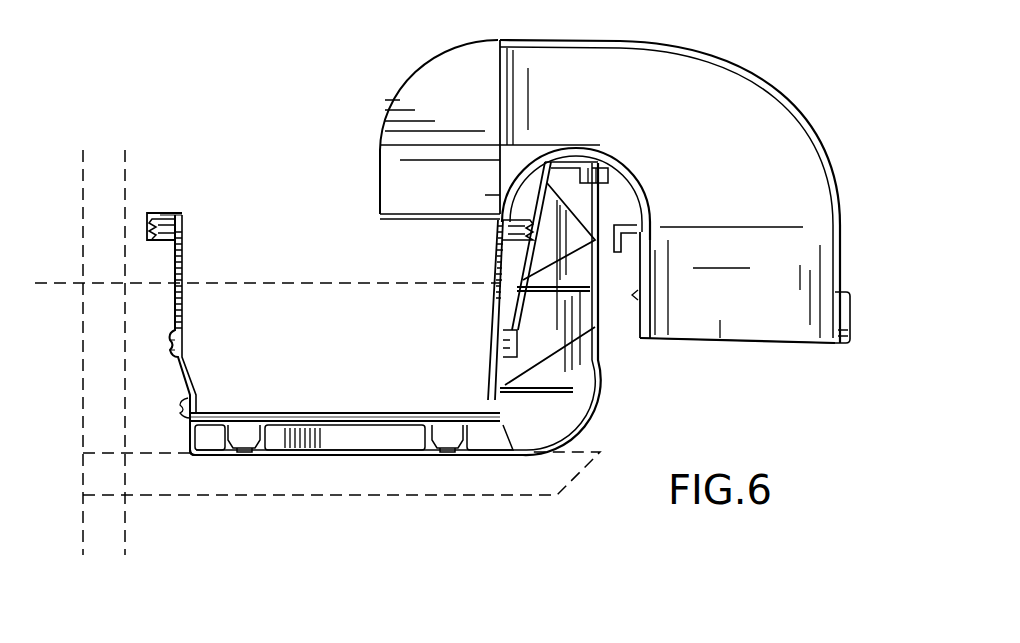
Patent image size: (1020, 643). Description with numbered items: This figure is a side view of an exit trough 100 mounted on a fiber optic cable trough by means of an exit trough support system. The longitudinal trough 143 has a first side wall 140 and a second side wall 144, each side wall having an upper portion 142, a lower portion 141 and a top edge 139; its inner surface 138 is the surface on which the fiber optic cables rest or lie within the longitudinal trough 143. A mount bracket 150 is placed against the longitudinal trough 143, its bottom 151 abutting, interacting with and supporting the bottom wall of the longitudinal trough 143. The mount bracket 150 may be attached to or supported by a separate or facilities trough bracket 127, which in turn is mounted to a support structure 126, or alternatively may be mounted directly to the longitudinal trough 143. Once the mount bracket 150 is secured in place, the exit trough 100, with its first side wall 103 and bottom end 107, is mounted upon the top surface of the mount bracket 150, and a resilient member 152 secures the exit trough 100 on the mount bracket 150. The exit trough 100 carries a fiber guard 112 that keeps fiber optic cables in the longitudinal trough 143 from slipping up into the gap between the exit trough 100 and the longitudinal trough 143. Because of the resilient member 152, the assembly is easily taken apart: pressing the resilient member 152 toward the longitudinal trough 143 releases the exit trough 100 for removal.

The exit trough 100 is at (638, 223).
The first side wall 103 is at (797, 180).
The bottom end 107 is at (772, 343).
The fiber guard 112 is at (495, 230).
The support structure 126 is at (103, 522).
The bracket 127 is at (477, 470).
The inner surface 138 is at (350, 413).
The top edge 139 is at (160, 216).
The first side wall 140 is at (146, 294).
The lower portion 141 is at (150, 378).
The upper portion 142 is at (150, 213).
The longitudinal trough 143 is at (342, 417).
The second side wall 144 is at (495, 300).
The mount bracket 150 is at (428, 308).
The bottom 151 is at (395, 440).
The resilient member 152 is at (627, 190).